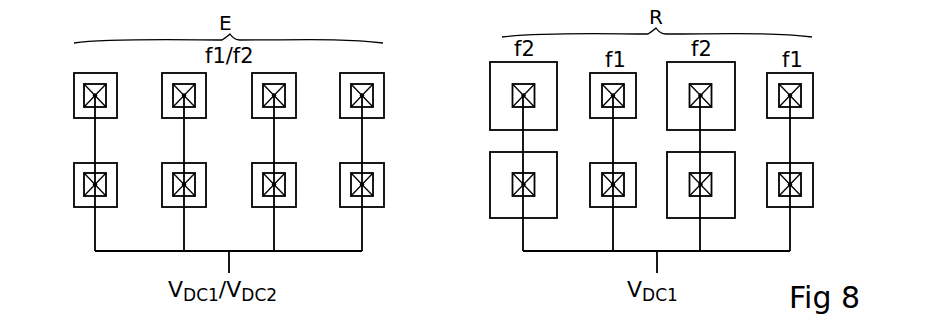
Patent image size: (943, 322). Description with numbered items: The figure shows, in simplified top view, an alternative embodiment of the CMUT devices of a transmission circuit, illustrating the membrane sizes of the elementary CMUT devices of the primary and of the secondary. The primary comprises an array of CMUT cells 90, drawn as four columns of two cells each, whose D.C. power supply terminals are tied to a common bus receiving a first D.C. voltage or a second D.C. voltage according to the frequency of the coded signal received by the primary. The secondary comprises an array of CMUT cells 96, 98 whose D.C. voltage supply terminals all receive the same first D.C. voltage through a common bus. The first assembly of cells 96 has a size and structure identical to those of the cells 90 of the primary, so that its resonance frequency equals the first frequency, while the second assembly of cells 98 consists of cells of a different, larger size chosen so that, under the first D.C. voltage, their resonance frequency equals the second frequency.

The CMUT cells 90 is at (78, 110).
The cells of the first assembly 96 is at (628, 112).
The cells of the second assembly 98 is at (507, 110).